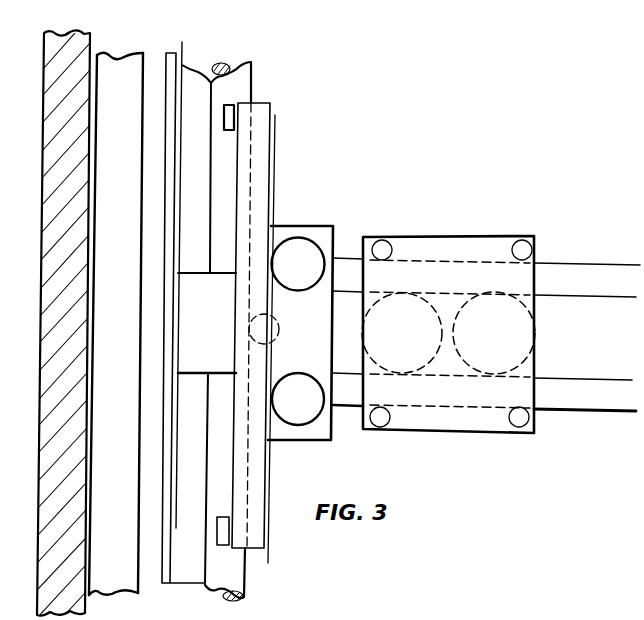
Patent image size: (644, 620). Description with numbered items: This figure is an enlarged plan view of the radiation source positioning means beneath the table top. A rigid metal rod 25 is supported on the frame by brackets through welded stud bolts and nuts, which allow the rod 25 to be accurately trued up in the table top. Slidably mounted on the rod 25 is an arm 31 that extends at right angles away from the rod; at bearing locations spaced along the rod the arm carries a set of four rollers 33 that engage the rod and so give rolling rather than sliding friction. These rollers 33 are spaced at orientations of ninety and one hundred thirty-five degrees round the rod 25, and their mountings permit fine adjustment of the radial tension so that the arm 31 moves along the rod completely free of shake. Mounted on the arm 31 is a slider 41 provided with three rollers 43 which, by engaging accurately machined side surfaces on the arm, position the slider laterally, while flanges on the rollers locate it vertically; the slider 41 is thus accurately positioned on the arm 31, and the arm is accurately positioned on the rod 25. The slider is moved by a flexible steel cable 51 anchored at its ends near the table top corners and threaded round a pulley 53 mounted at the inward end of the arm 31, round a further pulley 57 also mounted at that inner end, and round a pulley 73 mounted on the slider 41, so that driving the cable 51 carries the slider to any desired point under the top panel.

The rigid metal rod 25 is at (250, 62).
The arm 31 is at (607, 397).
The rollers 33 is at (233, 102).
The slider 41 is at (451, 235).
The rollers 43 is at (388, 236).
The flexible steel cable 51 is at (278, 163).
The pulley 53 is at (308, 236).
The further pulley 57 is at (306, 430).
The pulley 73 is at (468, 374).